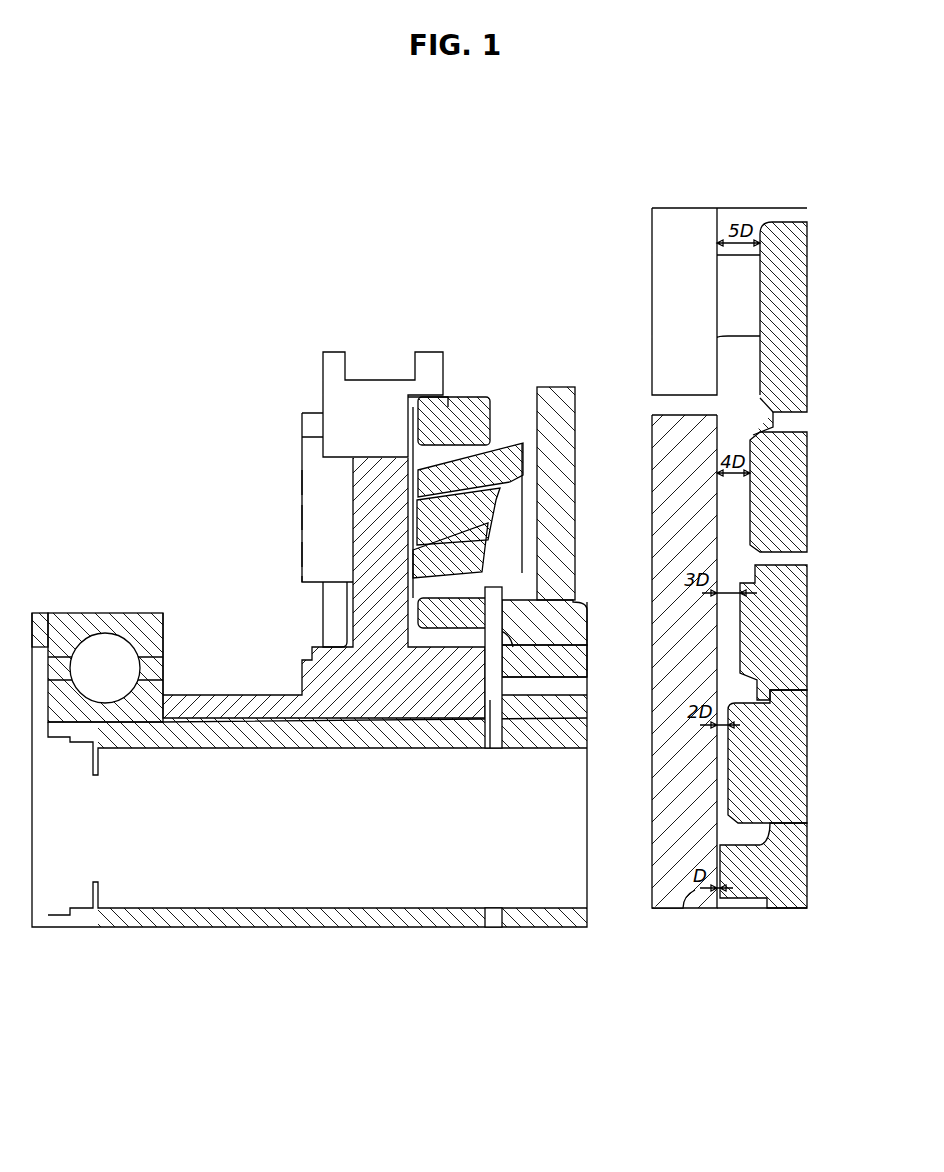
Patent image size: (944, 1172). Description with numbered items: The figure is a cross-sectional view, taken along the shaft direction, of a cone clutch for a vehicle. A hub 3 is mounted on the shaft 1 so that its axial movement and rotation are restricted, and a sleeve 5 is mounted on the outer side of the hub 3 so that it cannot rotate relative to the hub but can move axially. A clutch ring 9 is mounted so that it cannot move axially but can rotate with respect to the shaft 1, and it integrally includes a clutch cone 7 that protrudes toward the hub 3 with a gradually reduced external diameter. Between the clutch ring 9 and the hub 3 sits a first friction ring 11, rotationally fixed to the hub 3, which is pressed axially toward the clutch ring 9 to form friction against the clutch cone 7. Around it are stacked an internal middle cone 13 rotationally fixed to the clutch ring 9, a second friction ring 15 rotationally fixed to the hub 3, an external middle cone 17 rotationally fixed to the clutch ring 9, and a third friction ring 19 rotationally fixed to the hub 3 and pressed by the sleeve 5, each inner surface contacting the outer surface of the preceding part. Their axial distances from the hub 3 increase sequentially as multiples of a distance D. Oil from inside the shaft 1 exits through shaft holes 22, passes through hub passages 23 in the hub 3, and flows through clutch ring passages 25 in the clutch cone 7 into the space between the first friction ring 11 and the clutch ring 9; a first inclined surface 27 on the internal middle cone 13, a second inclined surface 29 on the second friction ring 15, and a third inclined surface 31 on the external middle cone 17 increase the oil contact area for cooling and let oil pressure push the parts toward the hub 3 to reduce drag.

The shaft 1 is at (252, 927).
The hub 3 is at (330, 680).
The sleeve 5 is at (381, 380).
The clutch cone 7 is at (515, 630).
The clutch ring 9 is at (565, 585).
The first friction ring 11 is at (600, 562).
The internal middle cone 13 is at (600, 540).
The second friction ring 15 is at (600, 505).
The external middle cone 17 is at (600, 472).
The third friction ring 19 is at (630, 418).
The shaft holes 22 is at (493, 750).
The hub passages 23 is at (492, 690).
The clutch ring passages 25 is at (545, 630).
The first inclined surface 27 is at (430, 530).
The second inclined surface 29 is at (430, 490).
The third inclined surface 31 is at (440, 453).